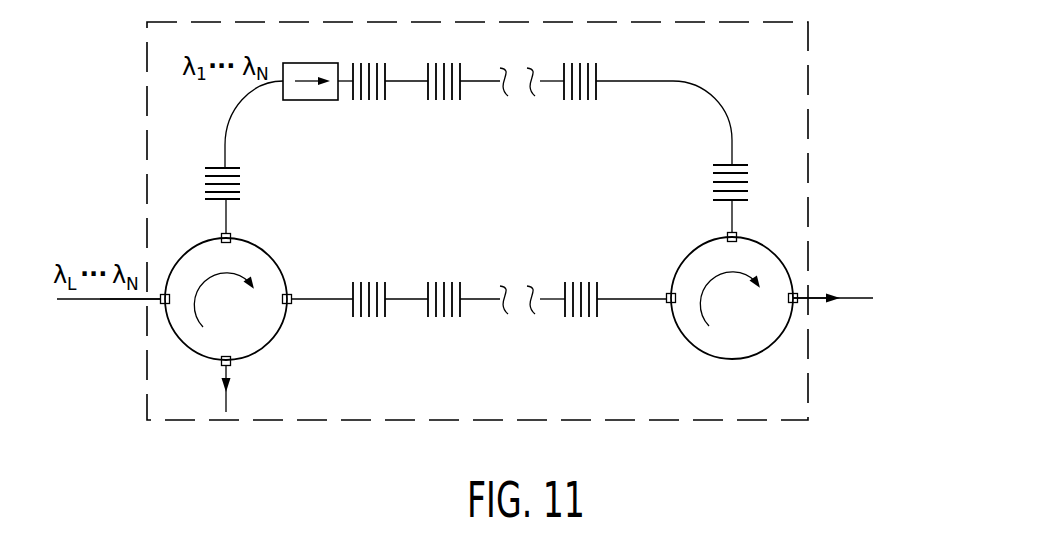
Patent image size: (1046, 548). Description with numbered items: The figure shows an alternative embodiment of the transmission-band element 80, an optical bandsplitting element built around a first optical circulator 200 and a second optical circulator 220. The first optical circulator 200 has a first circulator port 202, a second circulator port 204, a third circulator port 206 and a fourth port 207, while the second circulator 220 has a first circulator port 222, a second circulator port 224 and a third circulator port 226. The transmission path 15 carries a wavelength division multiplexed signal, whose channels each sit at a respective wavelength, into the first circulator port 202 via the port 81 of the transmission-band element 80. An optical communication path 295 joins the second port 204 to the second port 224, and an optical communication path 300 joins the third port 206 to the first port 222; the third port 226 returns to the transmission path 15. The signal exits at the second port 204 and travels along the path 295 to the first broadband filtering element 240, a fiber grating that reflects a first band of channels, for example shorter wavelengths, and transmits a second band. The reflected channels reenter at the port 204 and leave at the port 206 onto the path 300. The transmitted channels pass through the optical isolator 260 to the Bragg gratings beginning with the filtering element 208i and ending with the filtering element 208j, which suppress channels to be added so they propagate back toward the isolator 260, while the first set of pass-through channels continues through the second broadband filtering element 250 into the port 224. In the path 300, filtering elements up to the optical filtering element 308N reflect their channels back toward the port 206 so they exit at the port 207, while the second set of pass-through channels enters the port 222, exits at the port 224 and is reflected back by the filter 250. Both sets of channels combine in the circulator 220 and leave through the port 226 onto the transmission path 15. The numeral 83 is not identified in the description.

The transmission path 15 is at (93, 300).
The transmission-band element 80 is at (695, 421).
The port 81 is at (147, 300).
The output fiber 83 is at (800, 290).
The first optical circulator 200 is at (272, 257).
The first circulator port 202 is at (166, 305).
The second circulator port 204 is at (232, 234).
The third circulator port 206 is at (291, 293).
The fourth port 207 is at (232, 366).
The filtering element 208i is at (368, 103).
The filtering element 208j is at (583, 103).
The second optical circulator 220 is at (679, 268).
The first circulator port 222 is at (673, 304).
The second circulator port 224 is at (727, 233).
The third circulator port 226 is at (797, 305).
The first broadband filtering element 240 is at (203, 185).
The second broadband filtering element 250 is at (712, 178).
The optical isolator 260 is at (310, 63).
The optical communication path 295 is at (224, 145).
The optical communication path 300 is at (303, 302).
The optical filtering element 308N is at (583, 322).